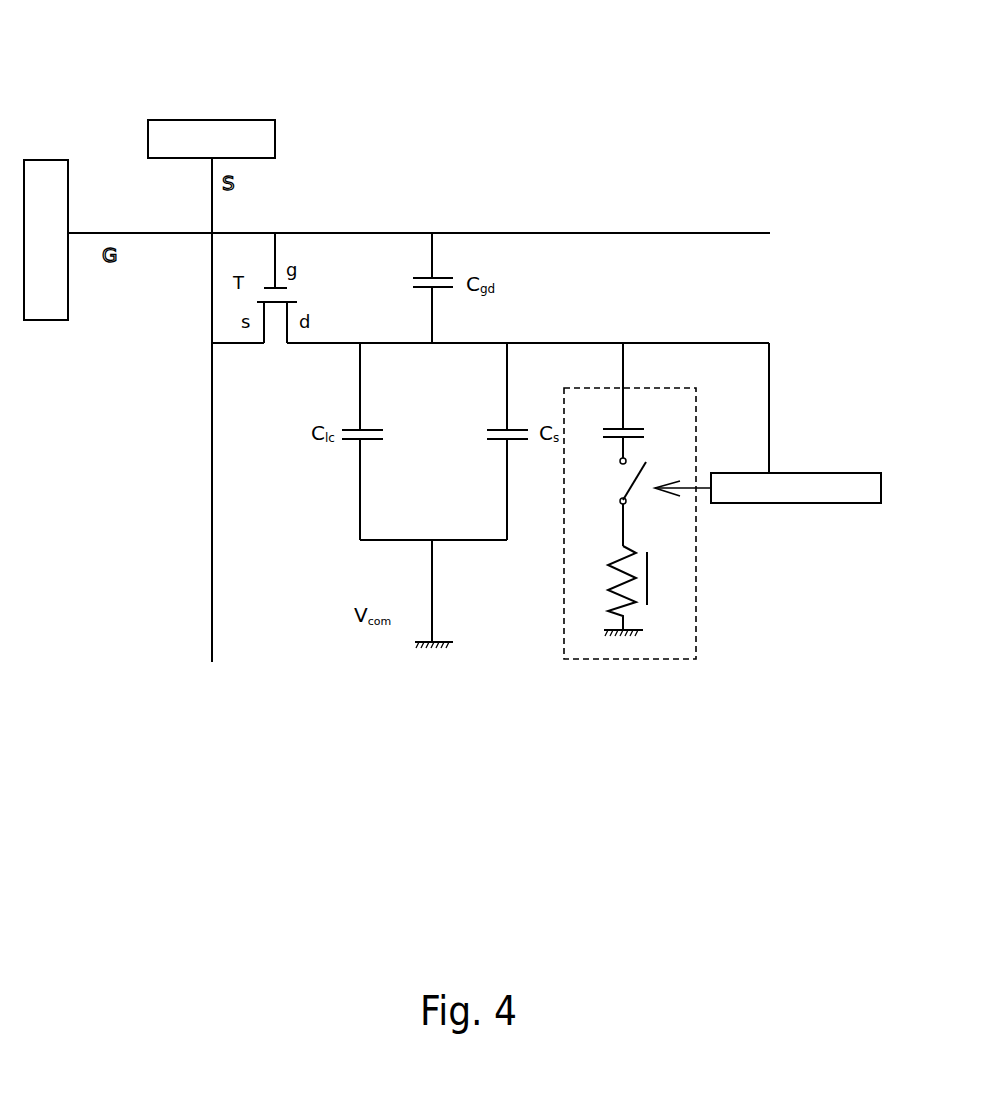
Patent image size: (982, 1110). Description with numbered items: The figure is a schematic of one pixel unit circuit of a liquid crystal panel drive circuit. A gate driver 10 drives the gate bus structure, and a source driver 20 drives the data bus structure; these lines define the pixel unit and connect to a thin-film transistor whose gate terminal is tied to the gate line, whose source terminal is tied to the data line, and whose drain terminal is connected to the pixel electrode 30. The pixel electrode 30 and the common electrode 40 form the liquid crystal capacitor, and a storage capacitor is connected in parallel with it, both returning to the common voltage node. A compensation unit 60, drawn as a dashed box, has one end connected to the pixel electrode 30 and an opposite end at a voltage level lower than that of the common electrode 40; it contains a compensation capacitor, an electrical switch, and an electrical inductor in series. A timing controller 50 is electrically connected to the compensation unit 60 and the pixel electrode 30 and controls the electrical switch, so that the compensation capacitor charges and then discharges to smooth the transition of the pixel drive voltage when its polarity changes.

The gate driver 10 is at (46, 158).
The source driver 20 is at (212, 118).
The pixel electrode 30 is at (373, 428).
The common electrode 40 is at (373, 443).
The timing controller 50 is at (795, 504).
The compensation unit 60 is at (630, 659).